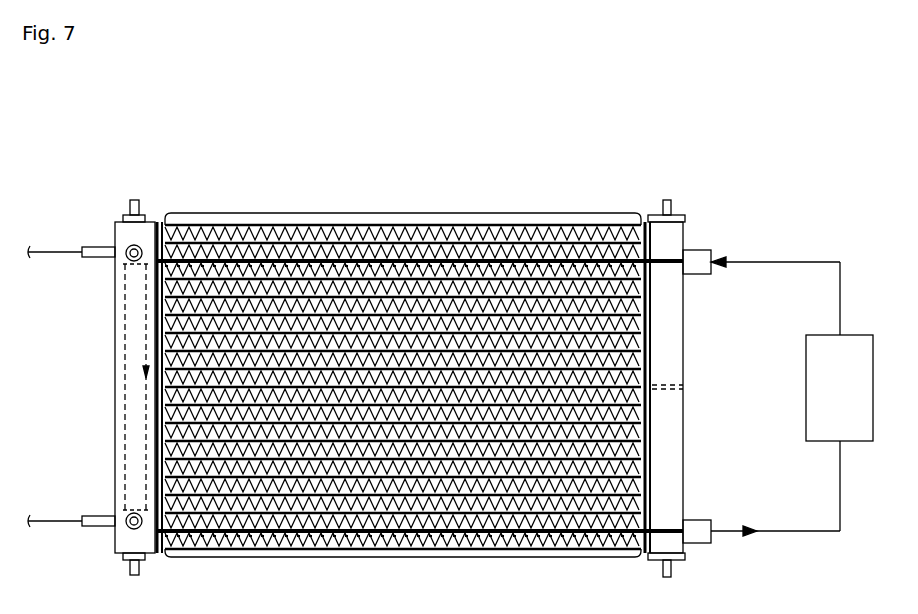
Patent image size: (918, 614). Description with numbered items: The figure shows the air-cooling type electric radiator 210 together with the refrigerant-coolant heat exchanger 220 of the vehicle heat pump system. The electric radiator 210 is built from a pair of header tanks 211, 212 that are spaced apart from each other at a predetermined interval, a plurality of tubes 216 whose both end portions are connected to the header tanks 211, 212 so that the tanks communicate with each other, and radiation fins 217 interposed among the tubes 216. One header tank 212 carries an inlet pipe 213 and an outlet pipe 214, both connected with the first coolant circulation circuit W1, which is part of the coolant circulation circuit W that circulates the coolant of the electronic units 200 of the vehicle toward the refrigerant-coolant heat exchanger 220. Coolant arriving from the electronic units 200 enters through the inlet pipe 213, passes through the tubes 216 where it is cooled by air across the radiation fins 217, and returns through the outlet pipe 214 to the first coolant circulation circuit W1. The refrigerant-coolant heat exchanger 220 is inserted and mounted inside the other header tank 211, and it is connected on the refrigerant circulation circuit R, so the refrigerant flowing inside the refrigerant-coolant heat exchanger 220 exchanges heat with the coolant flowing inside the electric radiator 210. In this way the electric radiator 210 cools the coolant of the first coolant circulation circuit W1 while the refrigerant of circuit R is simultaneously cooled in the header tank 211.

The electric radiator 210 is at (420, 312).
The header tank 211 is at (95, 365).
The header tank 212 is at (687, 372).
The inlet pipe 213 is at (697, 256).
The outlet pipe 214 is at (697, 523).
The tubes 216 is at (462, 233).
The radiation fins 217 is at (502, 233).
The refrigerant-coolant heat exchanger 220 is at (125, 390).
The electronic units 200 is at (792, 353).
The refrigerant circulation circuit R is at (55, 252).
The coolant circulation circuit W is at (830, 203).
The first coolant circulation circuit W1 is at (783, 262).